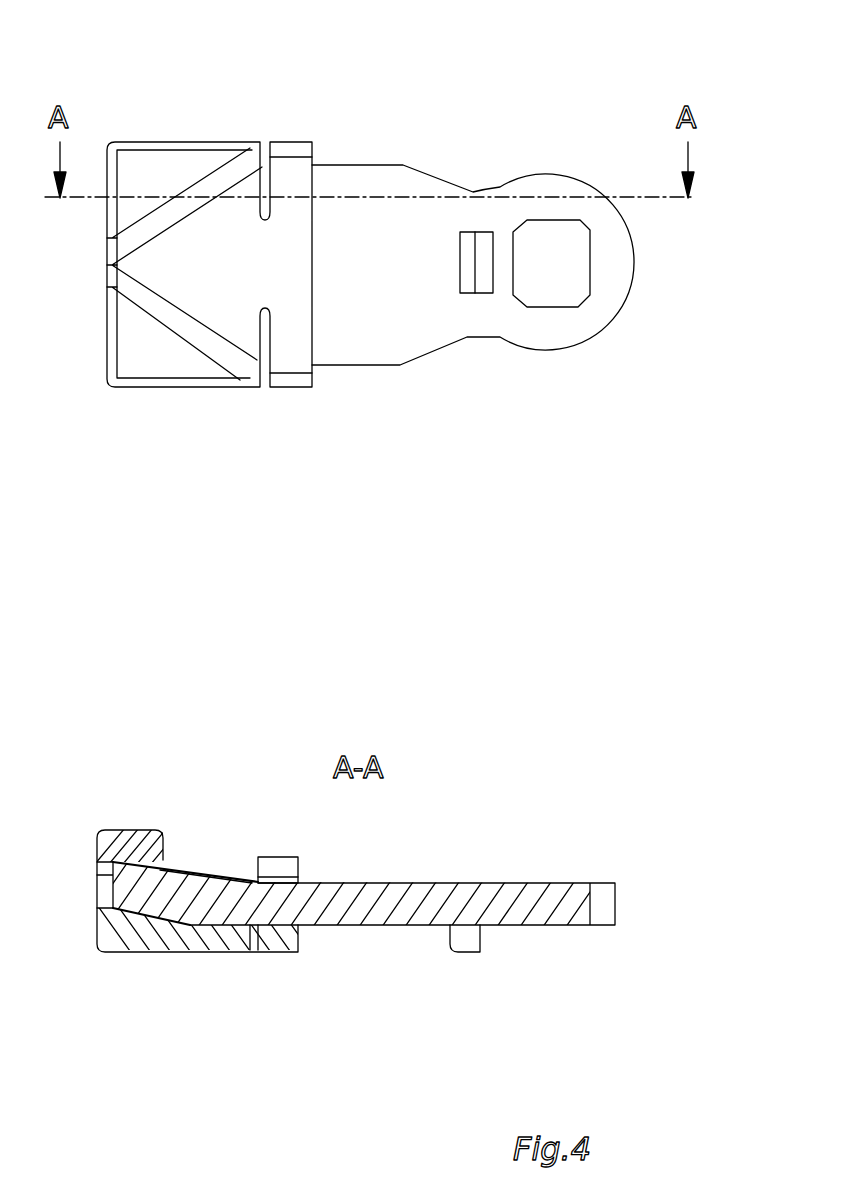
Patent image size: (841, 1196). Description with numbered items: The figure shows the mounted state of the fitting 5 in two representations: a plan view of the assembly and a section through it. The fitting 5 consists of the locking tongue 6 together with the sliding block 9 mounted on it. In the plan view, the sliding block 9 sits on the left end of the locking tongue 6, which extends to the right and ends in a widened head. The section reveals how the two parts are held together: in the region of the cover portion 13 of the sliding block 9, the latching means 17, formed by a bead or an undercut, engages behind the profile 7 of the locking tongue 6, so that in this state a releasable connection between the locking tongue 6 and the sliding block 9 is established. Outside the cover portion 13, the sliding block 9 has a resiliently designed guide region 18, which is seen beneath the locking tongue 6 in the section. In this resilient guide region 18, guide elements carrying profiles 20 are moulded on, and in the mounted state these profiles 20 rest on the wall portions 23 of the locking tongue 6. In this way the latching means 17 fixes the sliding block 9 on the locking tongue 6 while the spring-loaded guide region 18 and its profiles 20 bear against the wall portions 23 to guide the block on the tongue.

The fitting 5 is at (556, 895).
The sliding block 9 is at (128, 387).
The cover portion 13 is at (100, 828).
The latching means 17 is at (145, 863).
The profile 7 is at (157, 847).
The locking tongue 6 is at (178, 895).
The profiles 20 is at (275, 872).
The wall portions 23 is at (317, 838).
The guide region 18 is at (275, 940).